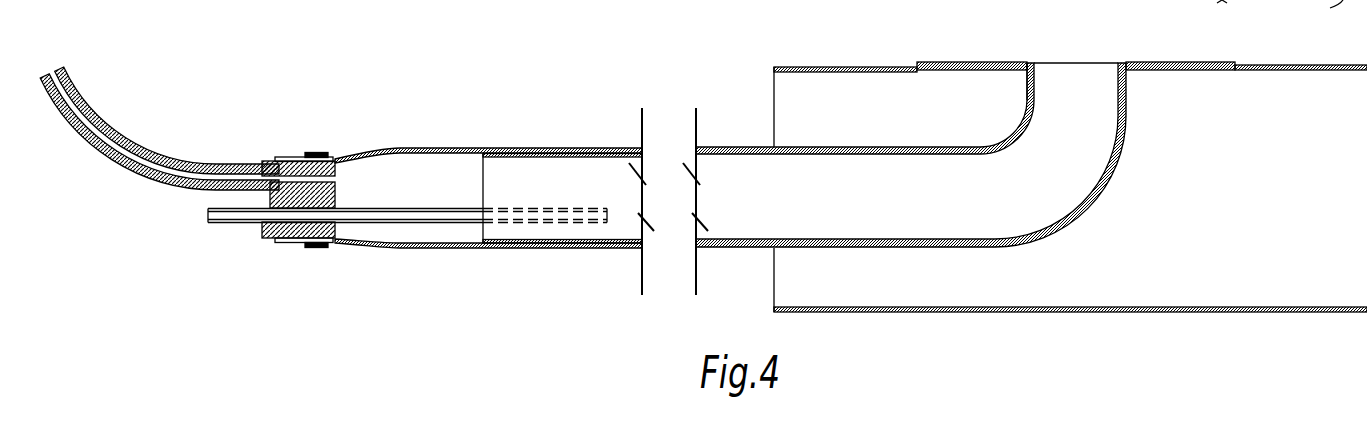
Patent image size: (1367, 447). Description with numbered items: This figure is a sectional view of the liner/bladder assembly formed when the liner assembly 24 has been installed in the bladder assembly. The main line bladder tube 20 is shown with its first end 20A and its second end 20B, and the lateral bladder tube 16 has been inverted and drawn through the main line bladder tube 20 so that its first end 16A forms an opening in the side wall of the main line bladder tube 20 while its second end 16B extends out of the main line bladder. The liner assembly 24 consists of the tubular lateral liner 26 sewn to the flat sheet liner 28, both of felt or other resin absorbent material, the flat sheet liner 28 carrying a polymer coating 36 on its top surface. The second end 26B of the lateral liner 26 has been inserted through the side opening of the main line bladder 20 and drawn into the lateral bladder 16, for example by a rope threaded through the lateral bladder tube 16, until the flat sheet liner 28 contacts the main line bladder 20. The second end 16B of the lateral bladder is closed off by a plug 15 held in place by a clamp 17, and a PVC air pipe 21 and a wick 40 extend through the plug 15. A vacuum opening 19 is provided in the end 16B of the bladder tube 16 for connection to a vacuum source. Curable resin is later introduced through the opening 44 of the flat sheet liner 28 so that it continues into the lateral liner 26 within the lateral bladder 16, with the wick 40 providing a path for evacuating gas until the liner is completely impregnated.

The plug 15 is at (260, 203).
The lateral bladder tube 16 is at (727, 147).
The first end of lateral bladder tube 16A is at (1027, 88).
The second end of lateral bladder tube 16B is at (282, 160).
The clamp 17 is at (320, 247).
The vacuum opening 19 is at (372, 150).
The main line bladder tube 20 is at (1147, 65).
The first end of main line bladder tube 20A is at (782, 67).
The housing second portion 20B is at (1348, 72).
The PVC air pipe 21 is at (105, 122).
The liner assembly 24 is at (935, 62).
The lateral liner 26 is at (745, 155).
The second end of lateral liner 26B is at (492, 158).
The flat sheet liner 28 is at (1132, 63).
The polymer coating 36 is at (1268, 0).
The wick 40 is at (223, 222).
The opening of flat sheet liner 44 is at (1062, 70).